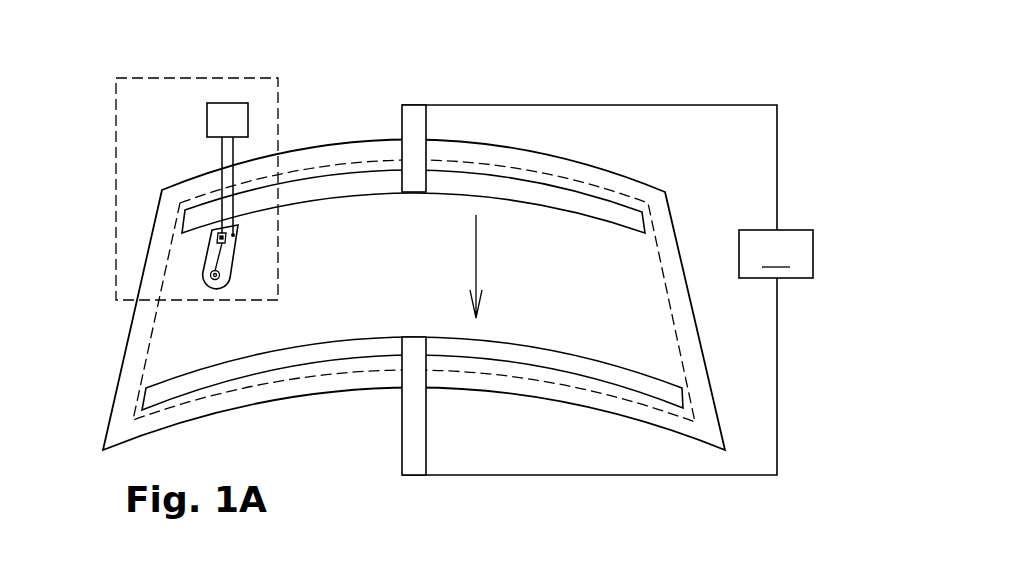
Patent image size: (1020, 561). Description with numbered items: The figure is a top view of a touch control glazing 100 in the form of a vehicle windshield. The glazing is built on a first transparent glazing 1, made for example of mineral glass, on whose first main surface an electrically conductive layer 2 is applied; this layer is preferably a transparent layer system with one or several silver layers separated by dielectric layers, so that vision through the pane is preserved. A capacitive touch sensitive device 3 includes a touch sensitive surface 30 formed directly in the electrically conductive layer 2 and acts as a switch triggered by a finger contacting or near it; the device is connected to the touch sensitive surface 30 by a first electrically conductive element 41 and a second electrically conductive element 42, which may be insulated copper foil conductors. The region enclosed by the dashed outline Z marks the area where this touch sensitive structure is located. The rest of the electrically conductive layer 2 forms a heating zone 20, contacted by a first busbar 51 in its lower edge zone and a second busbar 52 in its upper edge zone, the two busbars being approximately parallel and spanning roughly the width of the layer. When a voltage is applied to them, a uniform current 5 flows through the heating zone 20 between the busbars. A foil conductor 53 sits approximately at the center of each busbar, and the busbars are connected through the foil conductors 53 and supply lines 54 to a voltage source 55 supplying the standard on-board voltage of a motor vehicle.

The touch control glazing 100 is at (613, 77).
The first transparent glazing 1 is at (153, 273).
The electrically conductive layer 2 is at (183, 347).
The heating zone 20 is at (332, 303).
The capacitive touch sensitive device 3 is at (205, 112).
The touch sensitive surface 30 is at (203, 250).
The first electrically conductive element 41 is at (240, 152).
The second electrically conductive element 42 is at (222, 155).
The current 5 is at (476, 244).
The first busbar 51 is at (535, 357).
The second busbar 52 is at (613, 212).
The foil conductor 53 is at (411, 120).
The supply line 54 is at (727, 105).
The voltage source 55 is at (776, 254).
The sensor zone Z is at (116, 97).